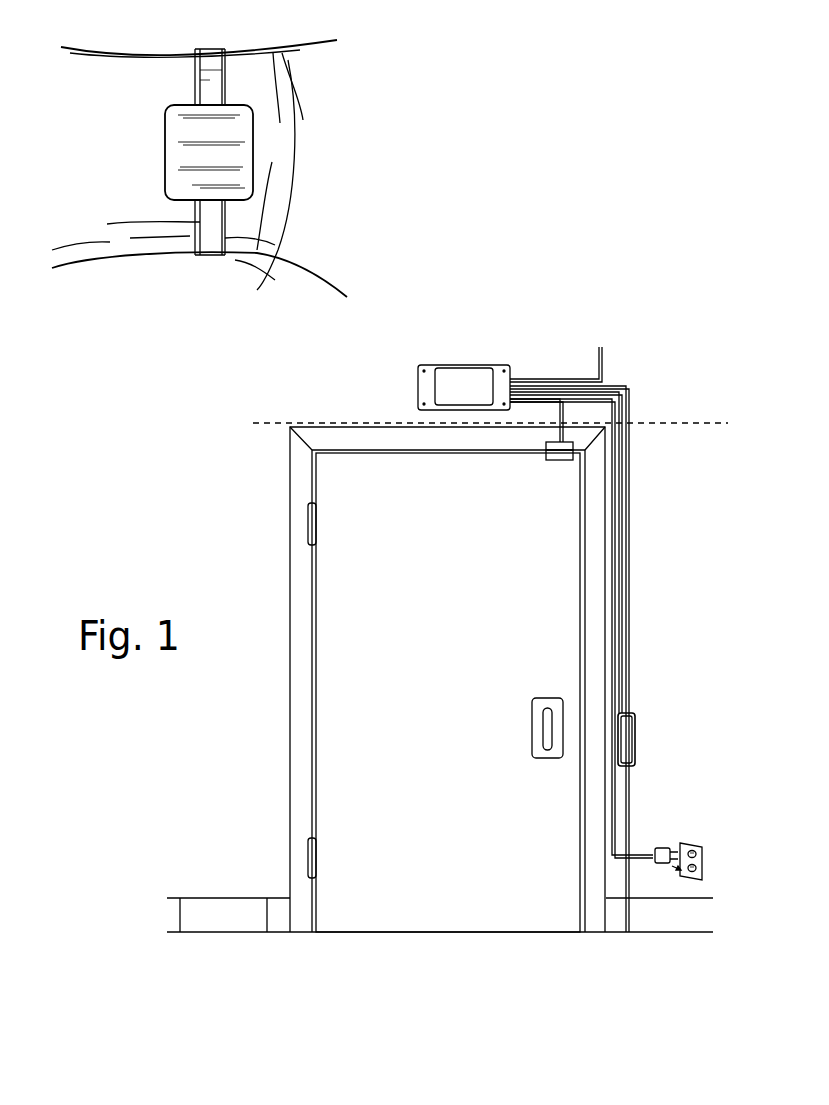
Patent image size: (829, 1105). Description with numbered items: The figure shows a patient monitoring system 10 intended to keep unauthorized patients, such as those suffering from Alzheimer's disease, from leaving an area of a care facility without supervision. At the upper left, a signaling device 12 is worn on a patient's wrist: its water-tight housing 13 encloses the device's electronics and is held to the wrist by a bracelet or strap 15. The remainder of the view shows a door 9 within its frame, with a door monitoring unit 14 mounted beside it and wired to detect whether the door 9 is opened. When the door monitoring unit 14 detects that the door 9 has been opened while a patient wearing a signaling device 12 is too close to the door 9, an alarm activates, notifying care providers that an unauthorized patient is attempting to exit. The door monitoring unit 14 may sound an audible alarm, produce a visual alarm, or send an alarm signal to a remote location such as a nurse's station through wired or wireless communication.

The door 9 is at (449, 723).
The patient monitoring system 10 is at (633, 140).
The signaling device 12 is at (231, 152).
The housing 13 is at (245, 157).
The door monitoring unit 14 is at (694, 723).
The strap 15 is at (203, 215).